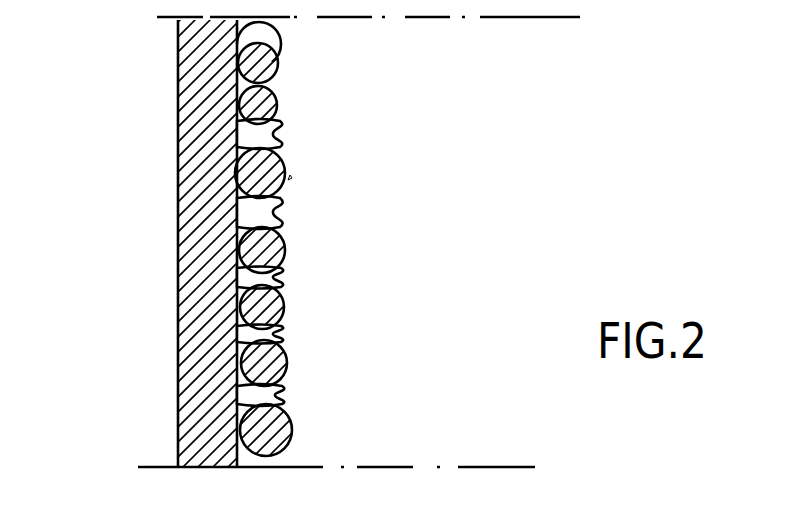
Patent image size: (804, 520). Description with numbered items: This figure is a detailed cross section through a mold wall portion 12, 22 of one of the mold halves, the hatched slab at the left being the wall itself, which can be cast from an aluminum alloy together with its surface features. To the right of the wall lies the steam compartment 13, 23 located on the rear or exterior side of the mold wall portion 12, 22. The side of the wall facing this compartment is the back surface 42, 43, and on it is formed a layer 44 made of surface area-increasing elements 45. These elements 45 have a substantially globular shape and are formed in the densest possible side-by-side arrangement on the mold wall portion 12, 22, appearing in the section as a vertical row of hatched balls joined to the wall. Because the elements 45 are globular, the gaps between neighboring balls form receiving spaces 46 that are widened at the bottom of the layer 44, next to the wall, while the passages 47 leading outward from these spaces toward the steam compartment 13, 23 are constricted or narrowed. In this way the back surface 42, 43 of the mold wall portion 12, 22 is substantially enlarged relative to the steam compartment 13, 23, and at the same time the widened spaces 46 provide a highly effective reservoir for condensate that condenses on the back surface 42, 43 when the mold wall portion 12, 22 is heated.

The mold wall portion 12 is at (370, 242).
The mold wall portion 22 is at (200, 170).
The steam compartment 13 is at (483, 220).
The steam compartment 23 is at (527, 237).
The back surface 42 is at (321, 239).
The back surface 43 is at (321, 239).
The layer 44 is at (306, 168).
The surface area-increasing element 45 is at (283, 305).
The receiving space 46 is at (240, 271).
The passage 47 is at (283, 337).